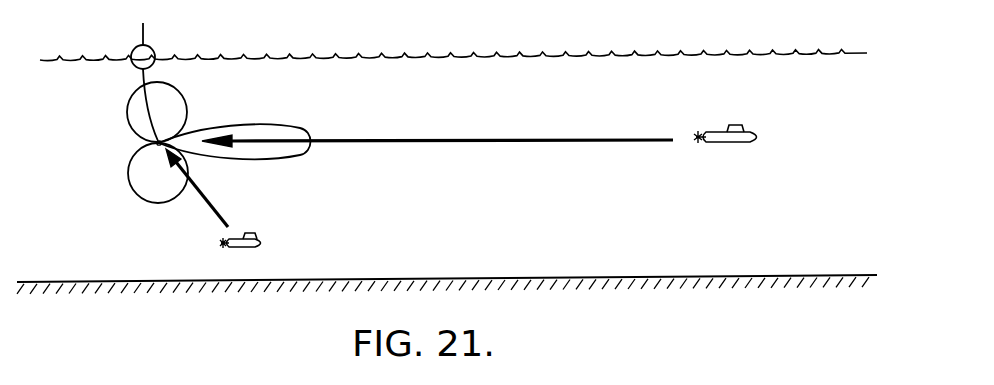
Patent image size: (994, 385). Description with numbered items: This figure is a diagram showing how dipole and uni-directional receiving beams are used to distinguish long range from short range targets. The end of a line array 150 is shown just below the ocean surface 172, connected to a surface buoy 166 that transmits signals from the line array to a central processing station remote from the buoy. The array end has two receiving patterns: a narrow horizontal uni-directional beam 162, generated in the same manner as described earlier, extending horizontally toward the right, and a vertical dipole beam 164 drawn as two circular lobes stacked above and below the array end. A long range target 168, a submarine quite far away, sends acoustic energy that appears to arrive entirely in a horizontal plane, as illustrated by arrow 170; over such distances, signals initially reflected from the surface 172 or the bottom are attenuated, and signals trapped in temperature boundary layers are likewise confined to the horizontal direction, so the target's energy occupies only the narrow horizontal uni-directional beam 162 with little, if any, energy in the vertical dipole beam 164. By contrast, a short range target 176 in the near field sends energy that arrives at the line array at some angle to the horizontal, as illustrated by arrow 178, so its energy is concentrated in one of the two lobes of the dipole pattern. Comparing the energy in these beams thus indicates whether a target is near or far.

The end of line array 150 is at (148, 143).
The narrow horizontal uni-directional beam 162 is at (225, 128).
The vertical dipole beam 164 is at (167, 204).
The surface buoy 166 is at (155, 44).
The long range target 168 is at (763, 117).
The arrow 170 is at (540, 138).
The surface of the ocean 172 is at (487, 58).
The short range target 176 is at (307, 254).
The arrow 178 is at (199, 183).